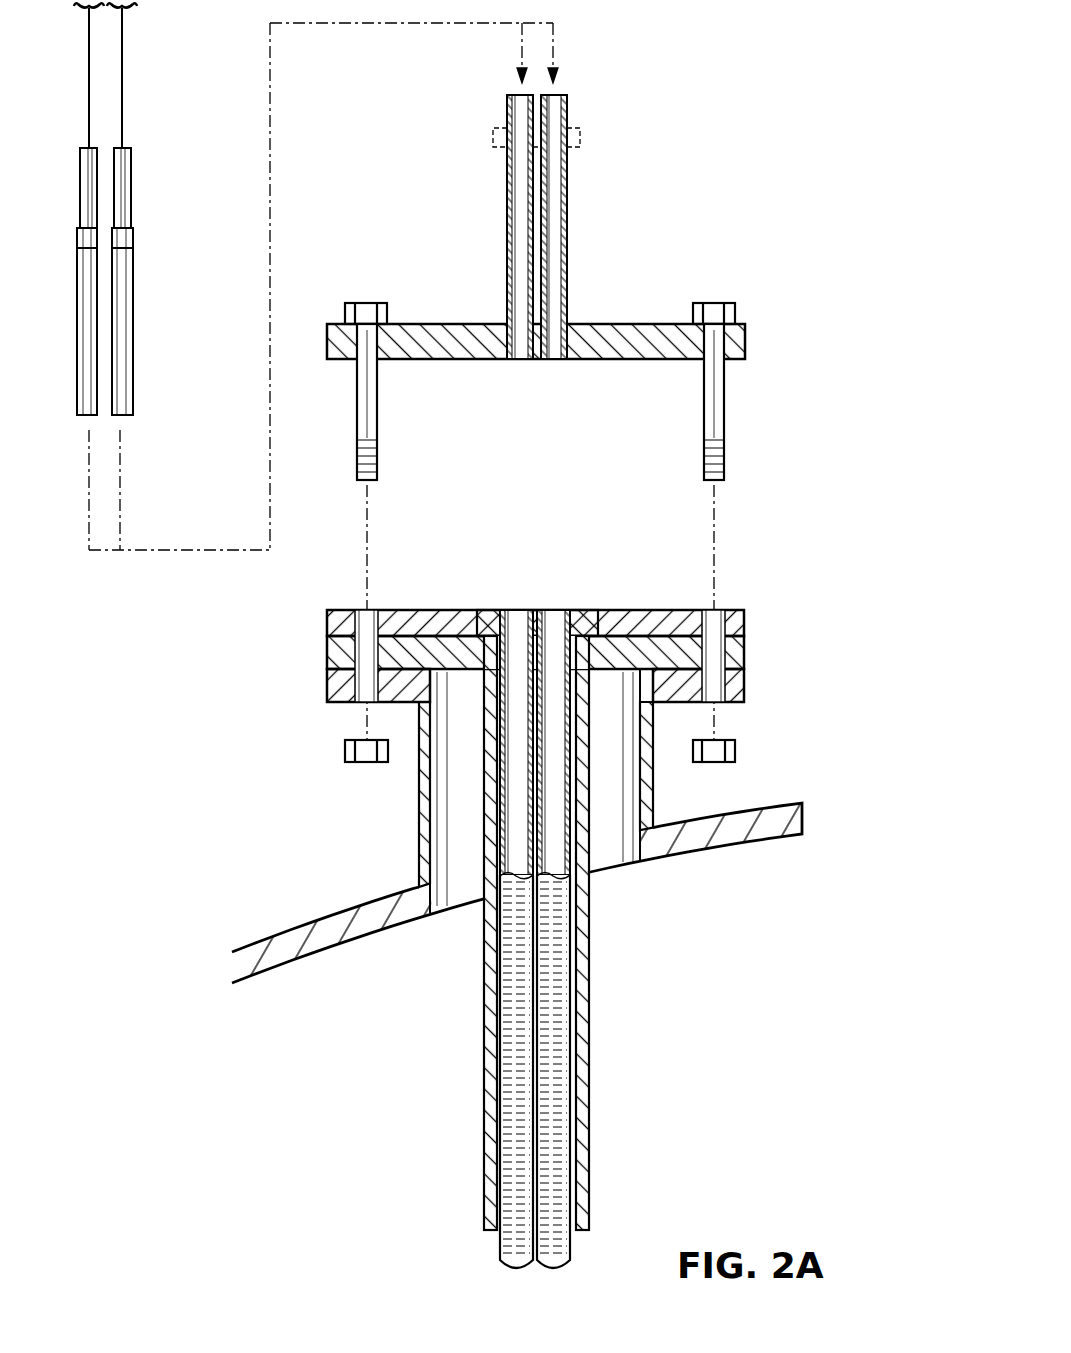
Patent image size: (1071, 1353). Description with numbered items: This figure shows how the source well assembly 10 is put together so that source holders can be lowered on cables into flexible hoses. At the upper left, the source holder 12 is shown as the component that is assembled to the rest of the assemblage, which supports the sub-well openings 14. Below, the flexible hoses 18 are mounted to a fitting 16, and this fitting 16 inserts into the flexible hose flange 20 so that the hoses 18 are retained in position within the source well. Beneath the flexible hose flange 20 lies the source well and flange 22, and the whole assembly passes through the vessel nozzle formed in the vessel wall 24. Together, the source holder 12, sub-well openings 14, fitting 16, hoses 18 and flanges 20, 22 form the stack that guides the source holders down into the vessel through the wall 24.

The injector assembly 10 is at (789, 34).
The source holder 12 is at (77, 295).
The sub-well openings 14 is at (507, 240).
The fitting 16 is at (583, 612).
The flexible hoses 18 is at (560, 893).
The flexible hose flange 20 is at (744, 623).
The source well and flange 22 is at (744, 650).
The vessel wall 24 is at (328, 913).